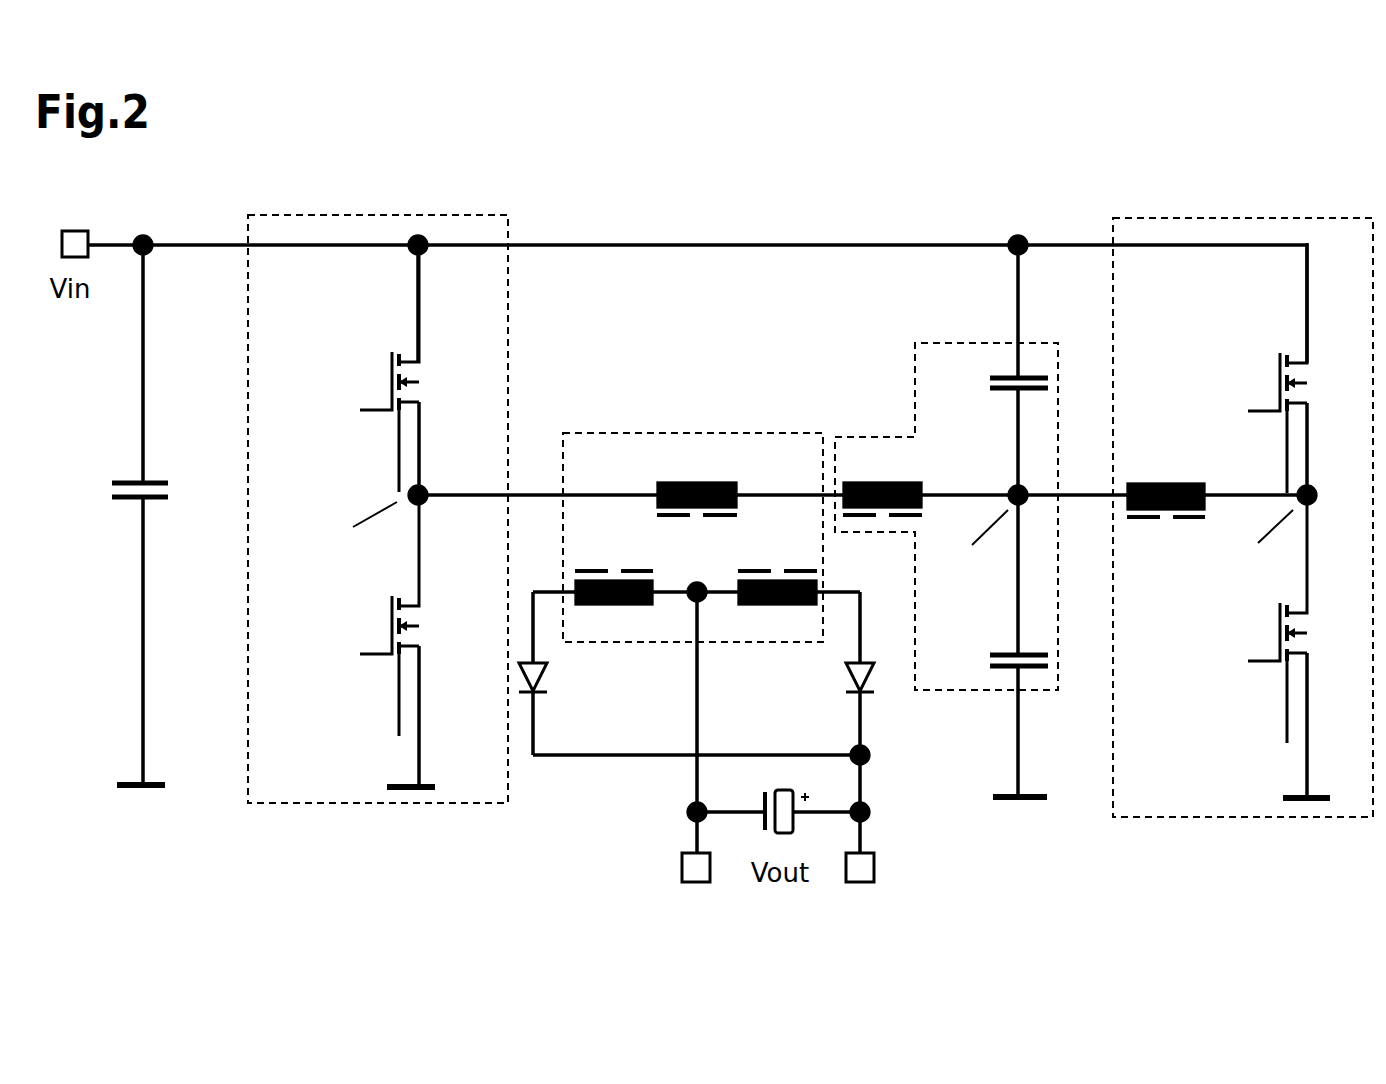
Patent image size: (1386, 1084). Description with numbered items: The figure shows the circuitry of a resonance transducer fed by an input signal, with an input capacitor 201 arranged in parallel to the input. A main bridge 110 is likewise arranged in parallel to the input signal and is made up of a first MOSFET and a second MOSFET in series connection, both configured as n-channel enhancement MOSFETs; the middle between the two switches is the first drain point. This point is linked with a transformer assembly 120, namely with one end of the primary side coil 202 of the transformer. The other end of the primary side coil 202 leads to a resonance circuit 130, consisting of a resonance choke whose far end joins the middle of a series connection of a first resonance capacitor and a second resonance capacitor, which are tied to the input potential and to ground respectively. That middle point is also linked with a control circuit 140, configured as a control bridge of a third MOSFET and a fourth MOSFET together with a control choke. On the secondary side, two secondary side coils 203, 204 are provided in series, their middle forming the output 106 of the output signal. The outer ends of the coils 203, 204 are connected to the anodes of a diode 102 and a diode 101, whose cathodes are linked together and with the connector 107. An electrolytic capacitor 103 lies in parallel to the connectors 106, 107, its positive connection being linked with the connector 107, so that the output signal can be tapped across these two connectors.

The main bridge 110 is at (357, 215).
The transformer assembly 120 is at (630, 433).
The resonance circuit 130 is at (915, 403).
The control circuit 140 is at (1262, 218).
The input capacitor 201 is at (116, 515).
The primary side coil 202 is at (697, 498).
The secondary side coil 203 is at (614, 584).
The secondary side coil 204 is at (777, 584).
The diode 101 is at (829, 702).
The diode 102 is at (564, 673).
The electrolytic capacitor 103 is at (765, 792).
The output 106 is at (692, 887).
The connector 107 is at (856, 887).